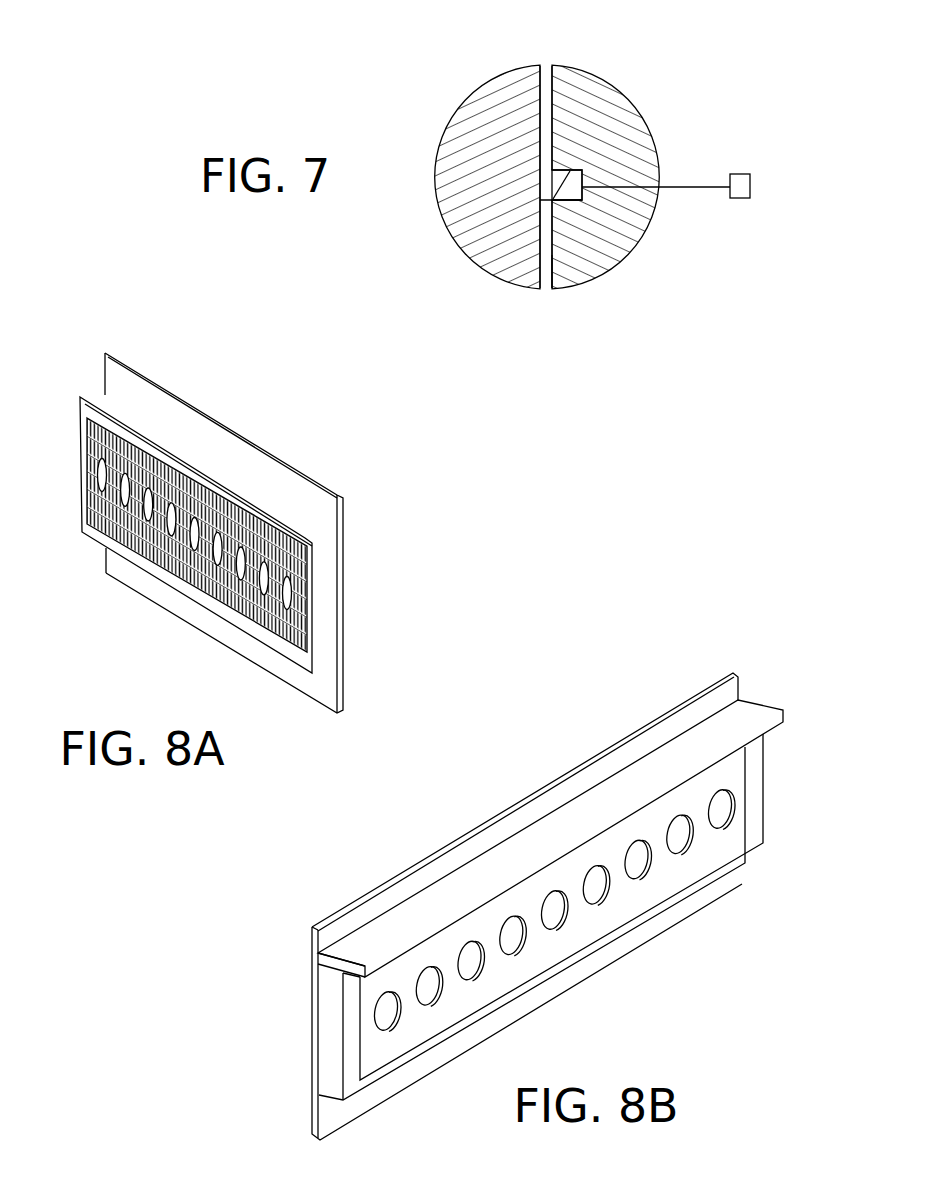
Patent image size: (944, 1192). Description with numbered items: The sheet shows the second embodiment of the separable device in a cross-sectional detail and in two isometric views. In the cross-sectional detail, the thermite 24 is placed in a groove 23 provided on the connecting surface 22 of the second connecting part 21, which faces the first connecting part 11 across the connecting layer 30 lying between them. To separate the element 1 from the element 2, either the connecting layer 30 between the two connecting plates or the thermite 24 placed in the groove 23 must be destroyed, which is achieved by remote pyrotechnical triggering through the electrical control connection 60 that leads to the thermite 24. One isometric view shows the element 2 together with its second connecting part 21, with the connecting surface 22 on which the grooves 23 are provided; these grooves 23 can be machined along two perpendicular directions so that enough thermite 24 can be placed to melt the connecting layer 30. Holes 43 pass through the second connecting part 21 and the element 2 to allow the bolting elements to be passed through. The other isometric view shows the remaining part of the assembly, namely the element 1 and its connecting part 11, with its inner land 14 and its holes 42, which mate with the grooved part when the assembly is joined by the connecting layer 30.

In FIG. 8B, the element 1 is at (646, 727).
In FIG. 7, the first connecting part 11 is at (457, 163).
In FIG. 8B, the first connecting part 11 is at (537, 842).
In FIG. 8B, the inner land 14 is at (746, 714).
In FIG. 8B, the holes 42 is at (637, 860).
In FIG. 8A, the element 2 is at (297, 468).
In FIG. 7, the second connecting part 21 is at (630, 163).
In FIG. 8A, the second connecting part 21 is at (105, 405).
In FIG. 7, the groove 23 is at (580, 202).
In FIG. 8A, the groove 23 is at (98, 445).
In FIG. 8A, the holes 43 is at (267, 583).
In FIG. 7, the connecting layer 30 is at (546, 87).
In FIG. 7, the thermite 24 is at (567, 185).
In FIG. 7, the connecting surface 22 is at (546, 257).
In FIG. 7, the electrical control connection 60 is at (750, 183).